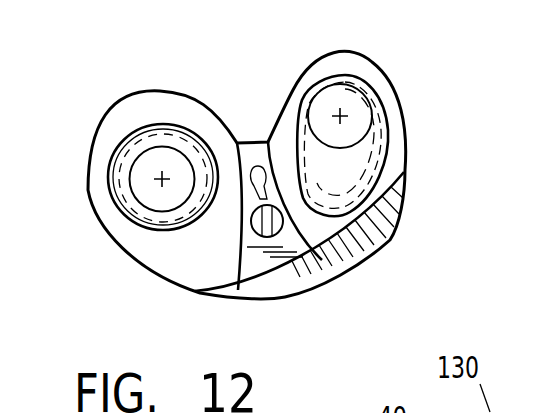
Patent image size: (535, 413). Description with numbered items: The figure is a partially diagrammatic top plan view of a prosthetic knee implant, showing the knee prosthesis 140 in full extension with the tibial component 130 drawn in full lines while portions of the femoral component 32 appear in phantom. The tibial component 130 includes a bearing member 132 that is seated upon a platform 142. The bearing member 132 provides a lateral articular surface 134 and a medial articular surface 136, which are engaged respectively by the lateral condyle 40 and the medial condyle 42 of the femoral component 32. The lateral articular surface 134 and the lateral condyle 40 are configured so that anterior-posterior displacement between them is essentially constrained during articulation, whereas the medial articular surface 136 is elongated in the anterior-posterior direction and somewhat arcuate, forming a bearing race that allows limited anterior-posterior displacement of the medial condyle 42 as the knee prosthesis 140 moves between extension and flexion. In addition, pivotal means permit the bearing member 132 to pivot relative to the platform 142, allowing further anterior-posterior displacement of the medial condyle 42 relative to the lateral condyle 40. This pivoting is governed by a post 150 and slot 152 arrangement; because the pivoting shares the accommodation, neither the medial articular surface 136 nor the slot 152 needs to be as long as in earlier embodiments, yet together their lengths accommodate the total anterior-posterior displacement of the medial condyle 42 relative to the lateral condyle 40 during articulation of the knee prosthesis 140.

The tibial component 130 is at (148, 93).
The bearing member 132 is at (170, 268).
The lateral articular surface 134 is at (132, 210).
The medial articular surface 136 is at (372, 192).
The knee prosthesis 140 is at (392, 247).
The platform 142 is at (363, 265).
The post 150 is at (283, 228).
The slot 152 is at (253, 165).
The femoral component 32 is at (379, 96).
The lateral condyle 40 is at (133, 197).
The medial condyle 42 is at (370, 138).